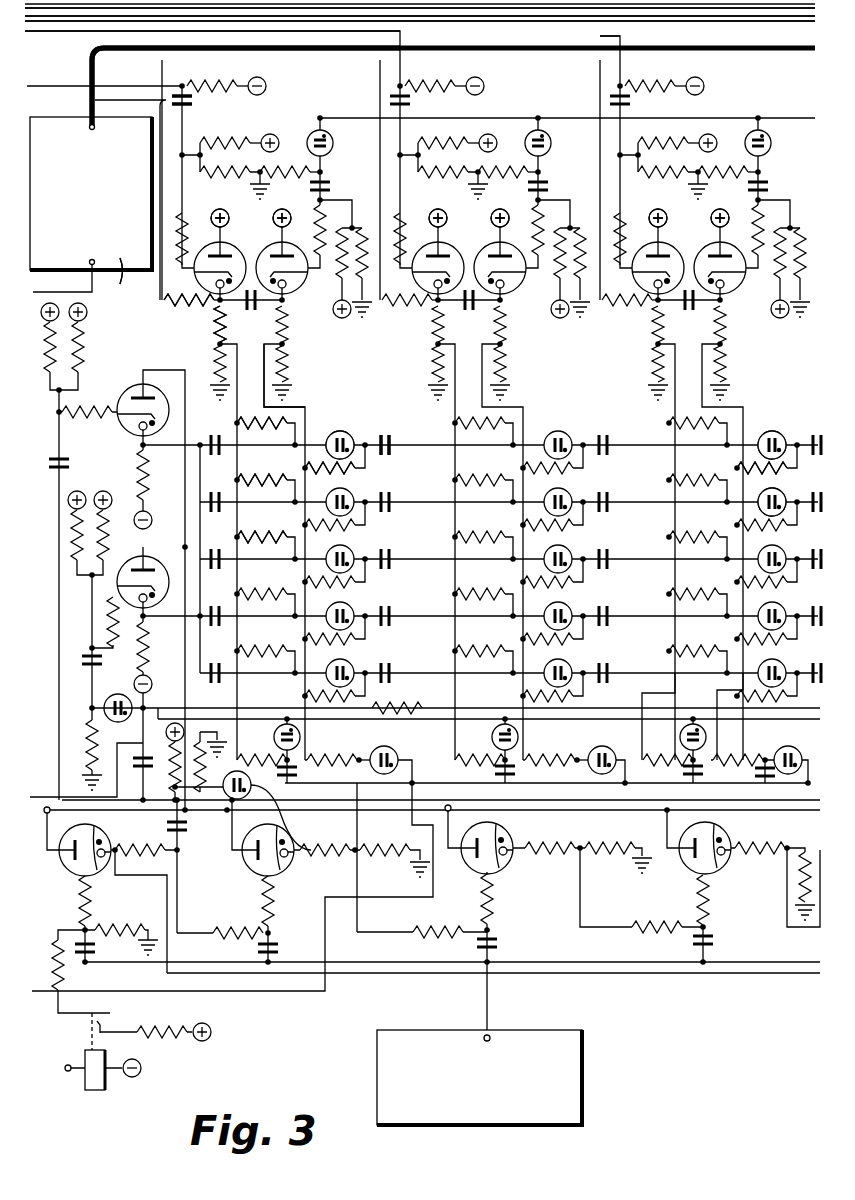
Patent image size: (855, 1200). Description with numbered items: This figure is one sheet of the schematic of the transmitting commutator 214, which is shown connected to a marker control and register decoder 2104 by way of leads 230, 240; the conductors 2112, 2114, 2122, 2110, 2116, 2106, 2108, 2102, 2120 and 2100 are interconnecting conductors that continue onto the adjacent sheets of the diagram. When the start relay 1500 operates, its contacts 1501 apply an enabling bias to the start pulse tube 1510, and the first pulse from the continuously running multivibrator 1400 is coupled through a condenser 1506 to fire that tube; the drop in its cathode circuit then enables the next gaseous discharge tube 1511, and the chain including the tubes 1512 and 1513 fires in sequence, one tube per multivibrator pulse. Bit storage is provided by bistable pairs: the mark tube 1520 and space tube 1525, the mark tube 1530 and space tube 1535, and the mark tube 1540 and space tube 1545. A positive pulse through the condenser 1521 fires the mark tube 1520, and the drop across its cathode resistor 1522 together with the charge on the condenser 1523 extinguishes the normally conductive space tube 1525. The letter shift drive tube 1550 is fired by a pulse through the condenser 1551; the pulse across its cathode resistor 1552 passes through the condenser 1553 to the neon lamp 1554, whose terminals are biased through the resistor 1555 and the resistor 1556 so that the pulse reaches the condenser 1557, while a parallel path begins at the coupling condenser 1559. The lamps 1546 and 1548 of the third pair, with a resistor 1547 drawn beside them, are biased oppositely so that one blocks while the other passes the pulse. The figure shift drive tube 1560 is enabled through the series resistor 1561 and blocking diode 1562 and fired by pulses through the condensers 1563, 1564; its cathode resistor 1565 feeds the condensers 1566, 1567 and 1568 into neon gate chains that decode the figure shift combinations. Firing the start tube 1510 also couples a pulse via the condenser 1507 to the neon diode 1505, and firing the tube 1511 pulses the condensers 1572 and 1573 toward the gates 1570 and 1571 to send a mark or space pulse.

The marker control and register decoder 2104 is at (91, 205).
The register lead 230 is at (111, 283).
The register lead 240 is at (135, 283).
The conductor 2112 is at (80, 36).
The conductor 2114 is at (74, 84).
The conductor 2122 is at (114, 52).
The conductor 2110 is at (600, 35).
The conductor 2116 is at (678, 21).
The conductor 2106 is at (746, 16).
The conductor 2108 is at (812, 8).
The coupling condenser 1521 is at (192, 102).
The mark tube 1520 is at (252, 240).
The space tube 1525 is at (292, 292).
The cathode resistor 1522 is at (214, 318).
The condenser 1523 is at (230, 319).
The mark tube 1530 is at (470, 240).
The space tube 1535 is at (512, 292).
The mark tube 1540 is at (690, 240).
The space tube 1545 is at (734, 292).
The letter shift drive tube 1550 is at (126, 398).
The coupling condenser 1551 is at (62, 456).
The cathode resistor 1552 is at (136, 486).
The coupling condenser 1553 is at (234, 434).
The blocking diode 1554 is at (350, 432).
The resistor 1555 is at (284, 404).
The resistor 1556 is at (356, 472).
The condenser 1557 is at (388, 434).
The coupling condenser 1559 is at (226, 482).
The neon lamp 1546 is at (796, 414).
The resistor 1547 is at (742, 470).
The neon lamp 1548 is at (778, 484).
The figure shift drive tube 1560 is at (130, 564).
The series resistor 1561 is at (392, 704).
The blocking diode 1562 is at (116, 700).
The coupling condenser 1563 is at (122, 768).
The coupling condenser 1564 is at (80, 661).
The cathode resistor 1565 is at (150, 670).
The condenser 1566 is at (234, 544).
The condenser 1567 is at (230, 600).
The coupling condenser 1568 is at (236, 684).
The neon lamp gate 1570 is at (300, 732).
The neon tube gate 1571 is at (400, 736).
The condenser 1572 is at (306, 775).
The condenser 1573 is at (444, 752).
The conductor 2102 is at (44, 797).
The conductor 2120 is at (46, 852).
The conductor 2100 is at (76, 992).
The start pulse tube 1510 is at (102, 838).
The condenser 1507 is at (188, 824).
The neon diode 1505 is at (283, 826).
The gaseous discharge tube 1511 is at (278, 870).
The gaseous discharge tube 1512 is at (510, 838).
The gaseous discharge tube 1513 is at (718, 862).
The condenser 1506 is at (104, 946).
The contacts 1501 is at (109, 1016).
The start relay 1500 is at (108, 1088).
The multivibrator 1400 is at (466, 1136).
The transmitting commutator 214 is at (689, 1015).